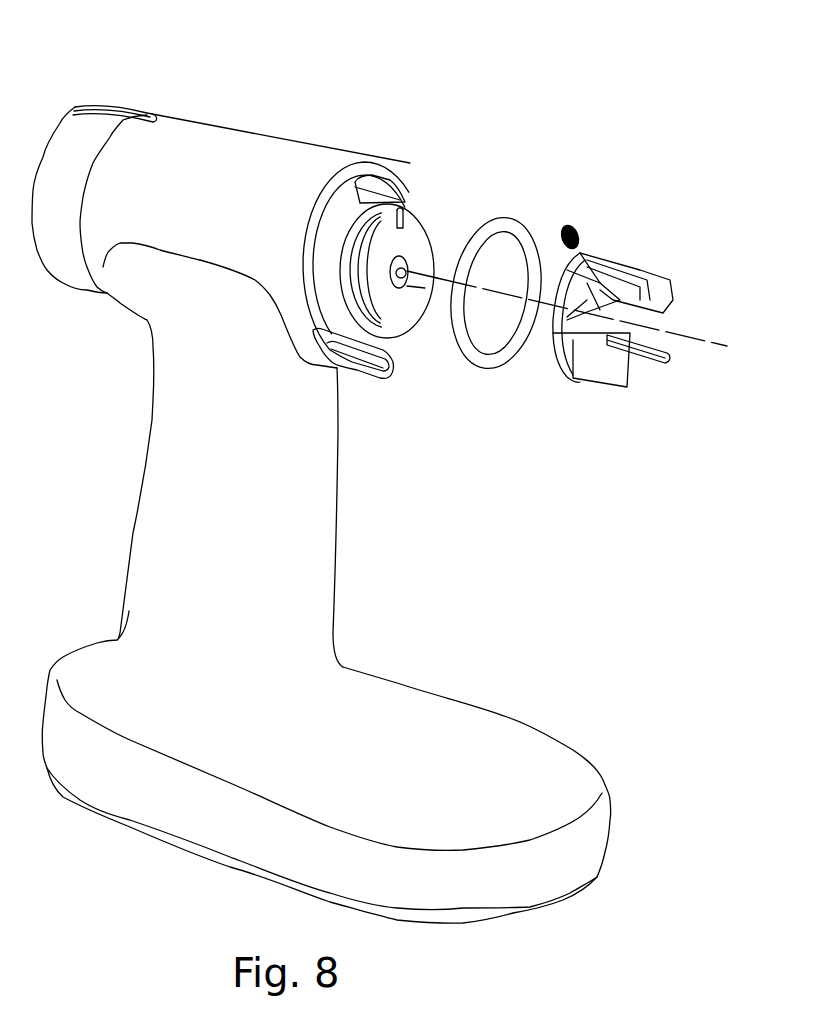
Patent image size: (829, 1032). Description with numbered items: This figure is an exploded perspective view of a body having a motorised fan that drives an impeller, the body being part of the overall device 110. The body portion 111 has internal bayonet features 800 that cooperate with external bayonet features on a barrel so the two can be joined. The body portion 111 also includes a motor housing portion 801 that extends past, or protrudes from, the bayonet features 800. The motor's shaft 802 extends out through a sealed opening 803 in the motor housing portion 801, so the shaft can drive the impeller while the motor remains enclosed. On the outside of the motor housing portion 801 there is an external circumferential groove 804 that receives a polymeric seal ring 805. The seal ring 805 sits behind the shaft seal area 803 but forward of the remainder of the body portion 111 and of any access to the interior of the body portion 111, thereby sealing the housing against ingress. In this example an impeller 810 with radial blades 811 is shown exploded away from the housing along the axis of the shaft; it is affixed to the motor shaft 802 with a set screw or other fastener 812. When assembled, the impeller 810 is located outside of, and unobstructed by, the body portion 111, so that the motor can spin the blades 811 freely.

The power tool 110 is at (718, 345).
The body portion 111 is at (290, 180).
The internal bayonet features 800 is at (407, 187).
The motor housing portion 801 is at (417, 223).
The motor shaft 802 is at (417, 282).
The sealed opening 803 is at (400, 288).
The external circumferential groove 804 is at (365, 233).
The polymeric seal ring 805 is at (503, 362).
The impeller 810 is at (603, 250).
The radial blades 811 is at (670, 288).
The set screw or other fastener 812 is at (580, 248).